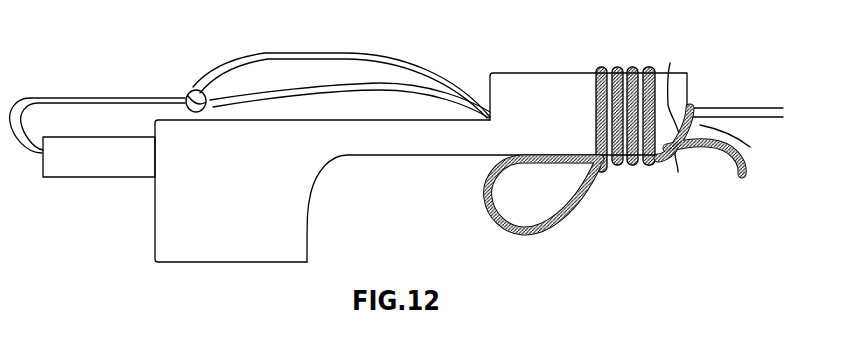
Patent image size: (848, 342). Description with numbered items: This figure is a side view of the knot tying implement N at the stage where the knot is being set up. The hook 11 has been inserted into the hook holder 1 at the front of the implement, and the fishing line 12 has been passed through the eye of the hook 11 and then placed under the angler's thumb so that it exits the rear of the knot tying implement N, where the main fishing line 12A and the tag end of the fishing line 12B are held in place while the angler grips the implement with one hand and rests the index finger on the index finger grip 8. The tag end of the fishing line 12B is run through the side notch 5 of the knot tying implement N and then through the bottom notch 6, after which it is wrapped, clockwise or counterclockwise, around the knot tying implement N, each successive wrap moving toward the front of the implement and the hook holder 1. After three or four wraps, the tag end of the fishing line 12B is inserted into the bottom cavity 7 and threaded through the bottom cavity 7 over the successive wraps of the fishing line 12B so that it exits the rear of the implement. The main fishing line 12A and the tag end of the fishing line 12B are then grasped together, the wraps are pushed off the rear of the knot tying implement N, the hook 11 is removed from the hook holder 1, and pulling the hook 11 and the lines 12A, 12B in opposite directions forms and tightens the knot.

The hook holder 1 is at (97, 157).
The knot tying implement N is at (200, 182).
The side notch 5 is at (670, 63).
The bottom notch 6 is at (678, 160).
The bottom cavity 7 is at (463, 157).
The index finger grip 8 is at (313, 197).
The hook 11 is at (97, 99).
The fishing line 12 is at (327, 52).
The main fishing line 12A is at (772, 108).
The tag end of the fishing line 12B is at (592, 194).